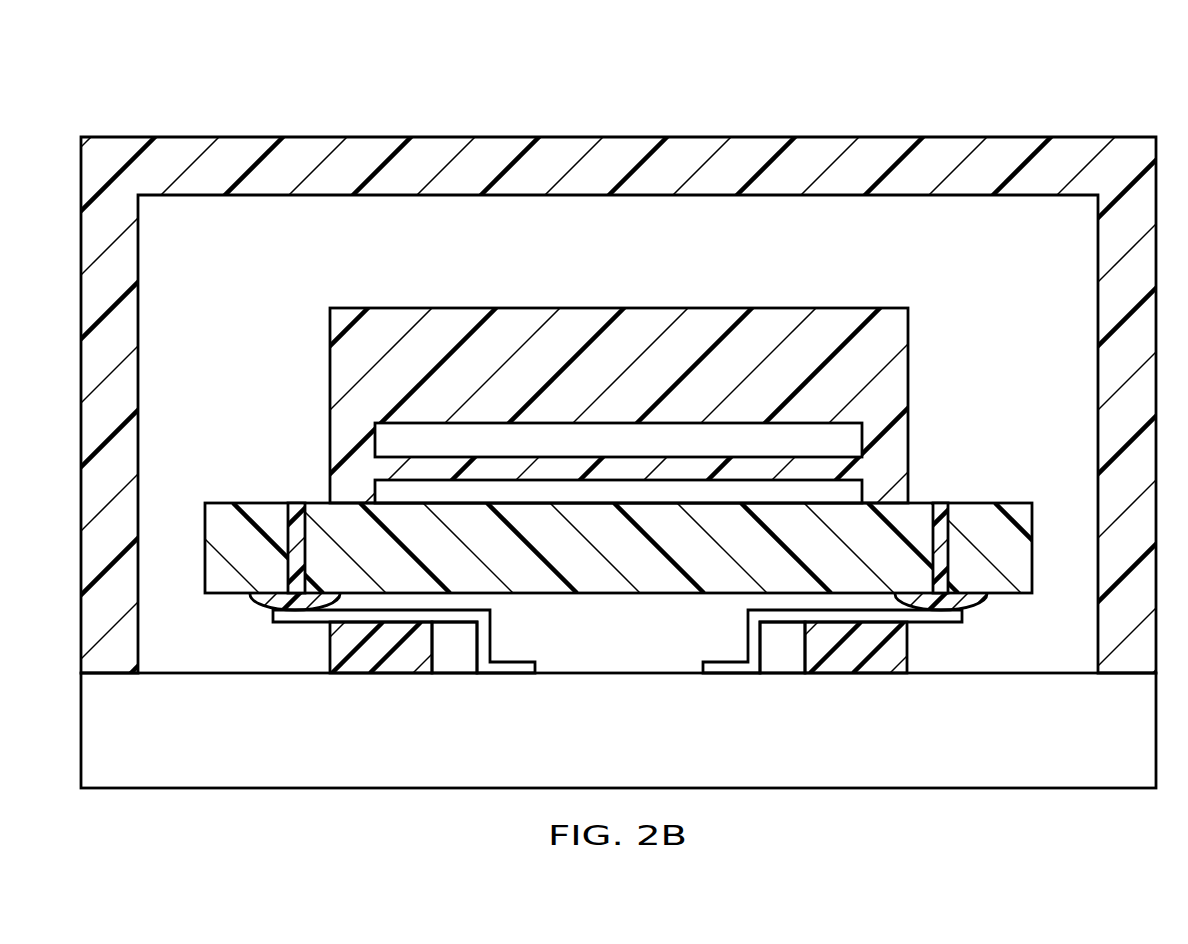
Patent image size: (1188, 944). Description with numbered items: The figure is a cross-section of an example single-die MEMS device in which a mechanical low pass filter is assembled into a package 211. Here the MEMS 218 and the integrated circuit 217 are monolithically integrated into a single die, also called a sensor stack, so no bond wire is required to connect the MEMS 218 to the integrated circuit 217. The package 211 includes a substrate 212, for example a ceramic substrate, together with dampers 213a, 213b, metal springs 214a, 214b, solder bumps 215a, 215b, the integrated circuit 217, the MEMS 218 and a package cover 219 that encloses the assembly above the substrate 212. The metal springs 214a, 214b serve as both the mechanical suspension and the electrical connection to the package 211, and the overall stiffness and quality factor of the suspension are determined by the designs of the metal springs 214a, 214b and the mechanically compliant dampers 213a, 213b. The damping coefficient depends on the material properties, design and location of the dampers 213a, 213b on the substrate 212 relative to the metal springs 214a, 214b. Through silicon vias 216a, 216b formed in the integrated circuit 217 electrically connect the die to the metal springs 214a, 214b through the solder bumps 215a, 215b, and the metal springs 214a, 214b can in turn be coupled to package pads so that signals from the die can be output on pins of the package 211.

The package 211 is at (840, 92).
The substrate 212 is at (267, 778).
The damper 213a is at (335, 645).
The damper 213b is at (900, 645).
The metal spring 214a is at (515, 663).
The metal spring 214b is at (728, 663).
The solder bump 215a is at (268, 610).
The solder bump 215b is at (980, 607).
The through silicon via 216a is at (298, 562).
The through silicon via 216b is at (935, 540).
The integrated circuit 217 is at (605, 595).
The MEMS 218 is at (340, 374).
The package cover 219 is at (182, 147).